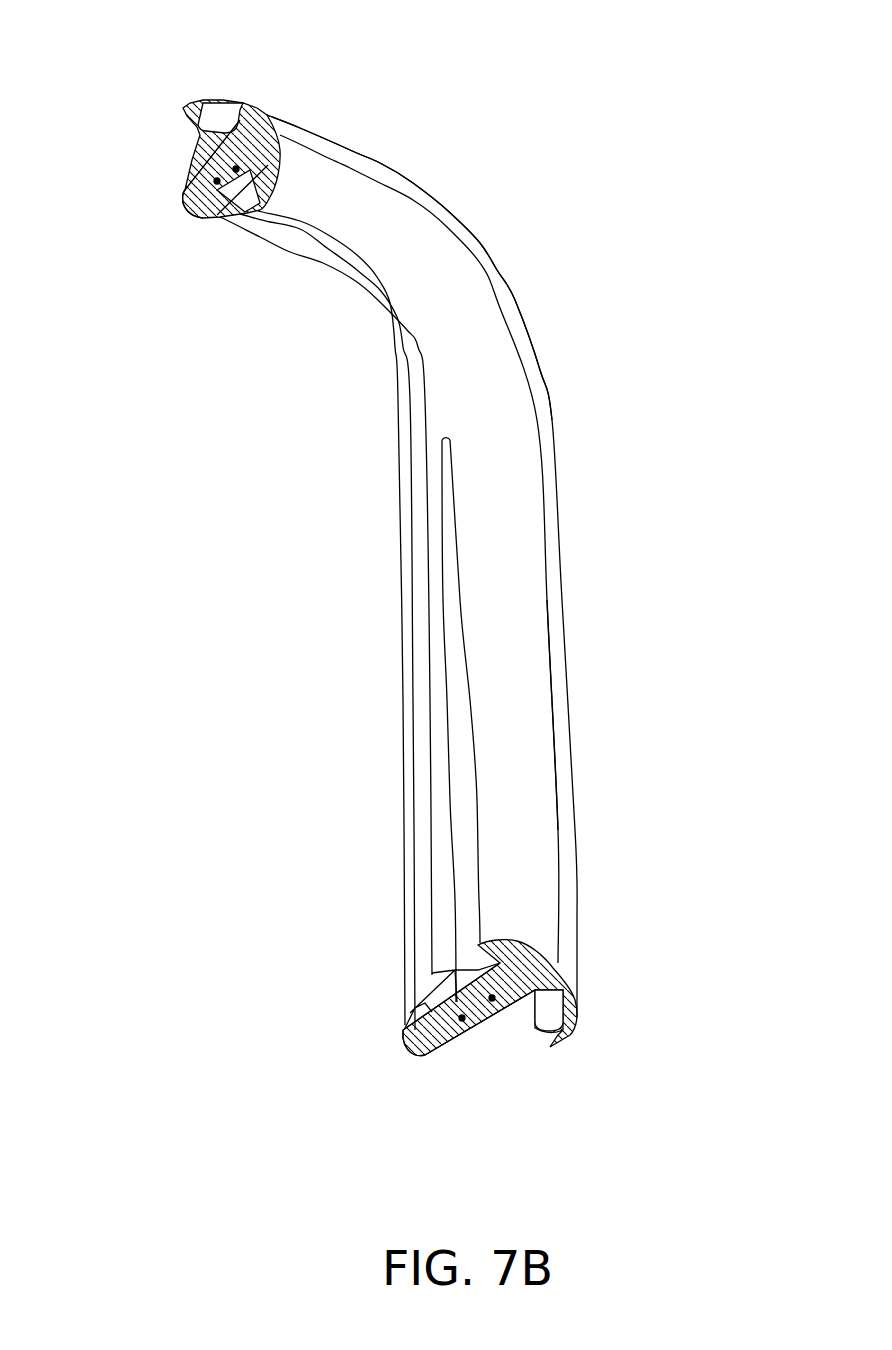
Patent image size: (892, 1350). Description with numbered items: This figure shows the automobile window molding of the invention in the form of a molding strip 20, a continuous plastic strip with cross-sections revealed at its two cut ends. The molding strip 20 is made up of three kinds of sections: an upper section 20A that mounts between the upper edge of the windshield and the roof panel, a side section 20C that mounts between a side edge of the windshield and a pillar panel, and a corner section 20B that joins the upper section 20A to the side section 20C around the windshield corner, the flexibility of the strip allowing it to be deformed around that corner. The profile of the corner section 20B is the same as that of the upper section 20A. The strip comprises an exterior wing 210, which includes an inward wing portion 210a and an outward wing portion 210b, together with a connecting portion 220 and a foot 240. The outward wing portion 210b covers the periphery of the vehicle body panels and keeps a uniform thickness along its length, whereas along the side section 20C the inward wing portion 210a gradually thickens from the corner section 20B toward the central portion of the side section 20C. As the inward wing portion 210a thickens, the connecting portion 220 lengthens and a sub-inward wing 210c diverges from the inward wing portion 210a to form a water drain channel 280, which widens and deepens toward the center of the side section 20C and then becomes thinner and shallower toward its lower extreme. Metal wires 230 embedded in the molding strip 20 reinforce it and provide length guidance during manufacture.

The molding strip 20 is at (472, 570).
The upper section 20A is at (290, 180).
The corner section 20B is at (489, 348).
The side section 20C is at (538, 818).
The exterior wing 210 is at (415, 242).
The inward wing portion 210a is at (347, 223).
The outward wing portion 210b is at (247, 106).
The sub-inward wing 210c is at (437, 645).
The connecting portion 220 is at (213, 173).
The metal wires 230 is at (236, 169).
The foot 240 is at (198, 206).
The water drain channel 280 is at (477, 773).